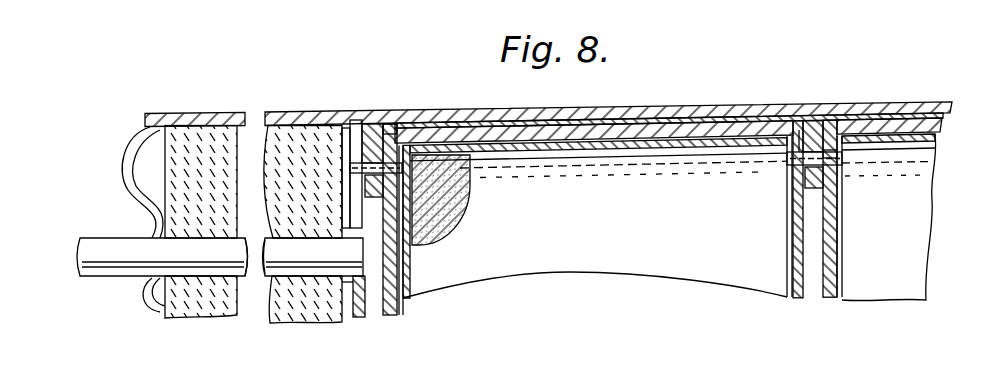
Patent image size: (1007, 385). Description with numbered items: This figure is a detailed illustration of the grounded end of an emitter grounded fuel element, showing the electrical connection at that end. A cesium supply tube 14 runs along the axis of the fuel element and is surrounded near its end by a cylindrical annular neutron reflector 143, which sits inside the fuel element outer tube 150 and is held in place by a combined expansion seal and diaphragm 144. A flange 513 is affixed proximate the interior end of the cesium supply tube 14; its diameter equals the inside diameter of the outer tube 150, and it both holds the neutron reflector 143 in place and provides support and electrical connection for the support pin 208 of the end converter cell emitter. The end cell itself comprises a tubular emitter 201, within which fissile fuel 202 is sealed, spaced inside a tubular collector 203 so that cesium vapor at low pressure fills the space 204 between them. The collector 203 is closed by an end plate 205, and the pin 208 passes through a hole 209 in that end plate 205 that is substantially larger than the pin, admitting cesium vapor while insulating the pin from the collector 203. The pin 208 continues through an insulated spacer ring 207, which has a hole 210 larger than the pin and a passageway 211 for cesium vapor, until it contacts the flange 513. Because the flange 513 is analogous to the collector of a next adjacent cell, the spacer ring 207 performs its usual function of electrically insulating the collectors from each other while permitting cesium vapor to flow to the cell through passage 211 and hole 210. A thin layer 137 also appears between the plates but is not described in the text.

The cesium supply tube 14 is at (112, 240).
The neutron reflector 143 is at (263, 231).
The combined expansion seal and diaphragm 144 is at (143, 158).
The fuel element outer tube 150 is at (667, 109).
The gasket layer 137 is at (942, 119).
The emitter 201 is at (570, 233).
The fissile fuel 202 is at (478, 195).
The collector 203 is at (560, 132).
The space 204 is at (494, 142).
The end plate 205 is at (388, 318).
The insulated spacer ring 207 is at (373, 137).
The support pin 208 is at (352, 168).
The hole 209 is at (393, 133).
The hole 210 is at (357, 146).
The passageway 211 is at (363, 180).
The flange 513 is at (367, 318).